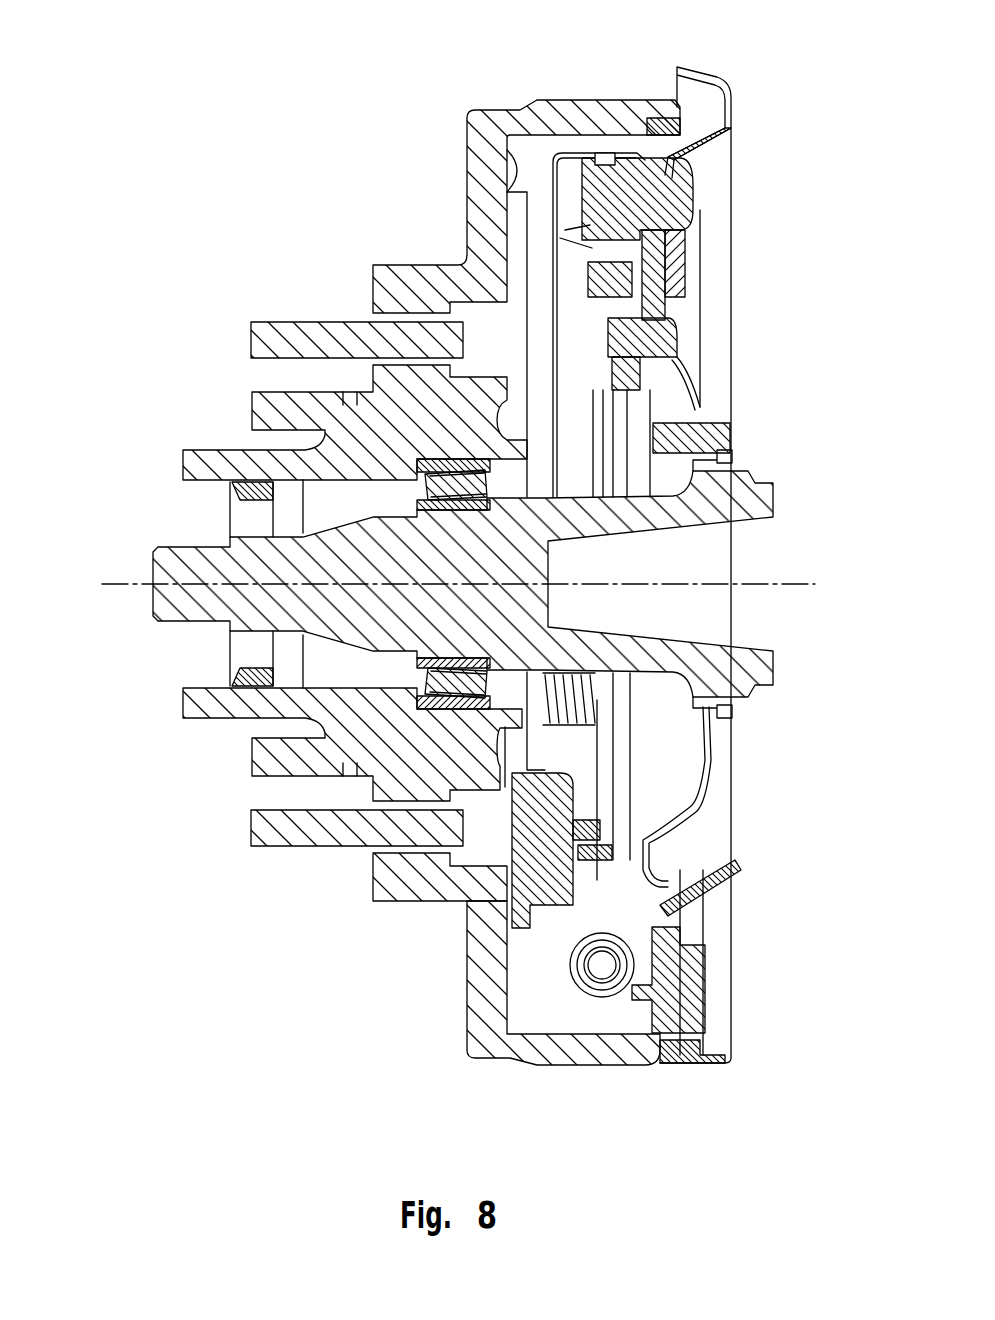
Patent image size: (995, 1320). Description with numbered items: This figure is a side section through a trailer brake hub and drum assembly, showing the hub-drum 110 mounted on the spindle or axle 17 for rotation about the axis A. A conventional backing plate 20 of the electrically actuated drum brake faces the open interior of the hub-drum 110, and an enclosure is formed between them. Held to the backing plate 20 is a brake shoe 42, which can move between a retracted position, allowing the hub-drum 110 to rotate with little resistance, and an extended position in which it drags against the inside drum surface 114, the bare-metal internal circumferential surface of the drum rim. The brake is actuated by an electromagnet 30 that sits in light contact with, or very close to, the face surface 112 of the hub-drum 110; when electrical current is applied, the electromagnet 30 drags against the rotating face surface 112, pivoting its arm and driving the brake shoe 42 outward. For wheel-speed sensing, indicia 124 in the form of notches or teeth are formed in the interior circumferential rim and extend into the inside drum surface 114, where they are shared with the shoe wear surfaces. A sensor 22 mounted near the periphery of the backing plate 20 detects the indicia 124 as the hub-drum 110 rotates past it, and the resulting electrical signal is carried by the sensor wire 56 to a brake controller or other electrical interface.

The hub-drum 110 is at (431, 450).
The face surface 112 is at (482, 117).
The inside drum surface 114 is at (540, 1020).
The indicia 124 is at (663, 125).
The backing plate 20 is at (733, 105).
The brake shoe 42 is at (550, 233).
The spindle or axle 17 is at (153, 565).
The axis A is at (815, 580).
The sensor wire 56 is at (733, 870).
The electromagnet 30 is at (525, 870).
The sensor 22 is at (665, 1030).